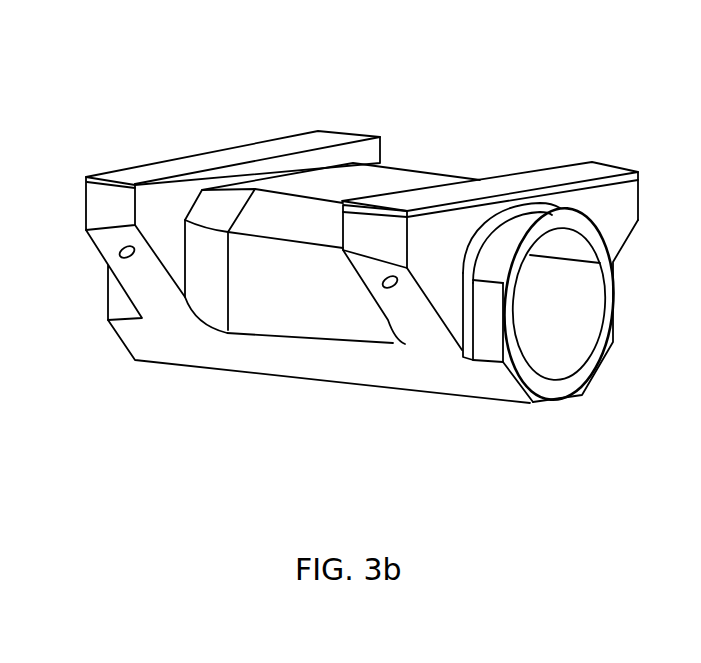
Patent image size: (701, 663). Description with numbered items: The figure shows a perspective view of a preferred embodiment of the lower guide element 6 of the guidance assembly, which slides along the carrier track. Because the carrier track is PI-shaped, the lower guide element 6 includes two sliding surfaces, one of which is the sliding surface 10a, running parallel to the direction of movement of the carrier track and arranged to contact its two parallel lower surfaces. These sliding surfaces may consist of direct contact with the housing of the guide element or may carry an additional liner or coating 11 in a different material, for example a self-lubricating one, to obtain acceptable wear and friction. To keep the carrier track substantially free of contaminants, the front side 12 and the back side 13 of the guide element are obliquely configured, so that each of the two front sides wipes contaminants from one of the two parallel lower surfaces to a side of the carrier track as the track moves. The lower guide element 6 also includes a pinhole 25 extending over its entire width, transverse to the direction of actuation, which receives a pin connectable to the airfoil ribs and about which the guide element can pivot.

The lower guide element 6 is at (440, 95).
The sliding surface 10a is at (292, 138).
The liner or coating 11 is at (106, 176).
The front side 12 is at (103, 207).
The back side 13 is at (433, 171).
The pinhole 25 is at (557, 350).